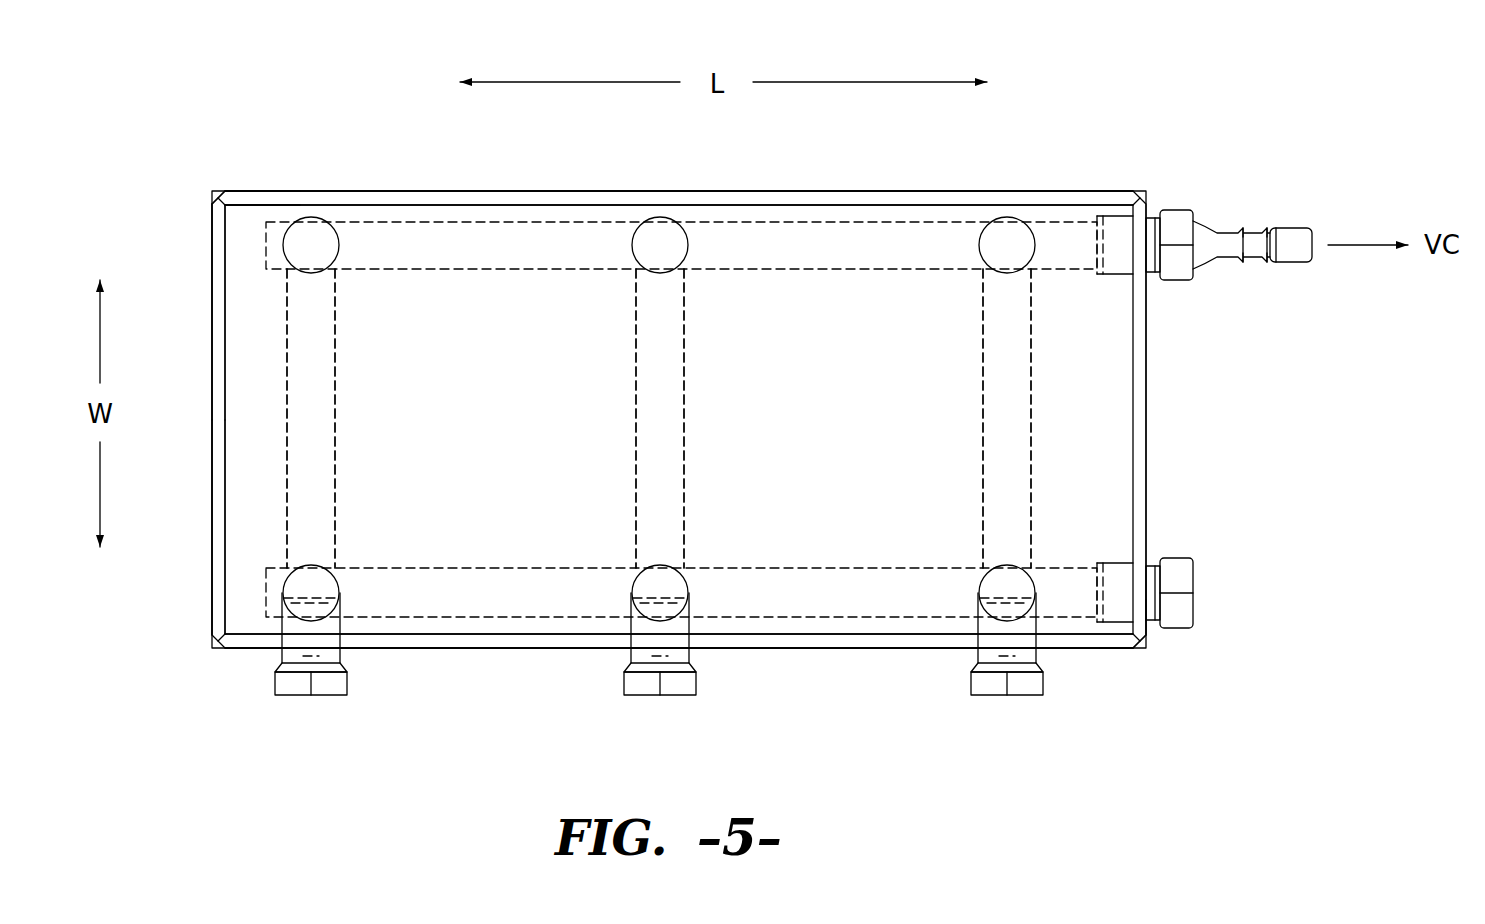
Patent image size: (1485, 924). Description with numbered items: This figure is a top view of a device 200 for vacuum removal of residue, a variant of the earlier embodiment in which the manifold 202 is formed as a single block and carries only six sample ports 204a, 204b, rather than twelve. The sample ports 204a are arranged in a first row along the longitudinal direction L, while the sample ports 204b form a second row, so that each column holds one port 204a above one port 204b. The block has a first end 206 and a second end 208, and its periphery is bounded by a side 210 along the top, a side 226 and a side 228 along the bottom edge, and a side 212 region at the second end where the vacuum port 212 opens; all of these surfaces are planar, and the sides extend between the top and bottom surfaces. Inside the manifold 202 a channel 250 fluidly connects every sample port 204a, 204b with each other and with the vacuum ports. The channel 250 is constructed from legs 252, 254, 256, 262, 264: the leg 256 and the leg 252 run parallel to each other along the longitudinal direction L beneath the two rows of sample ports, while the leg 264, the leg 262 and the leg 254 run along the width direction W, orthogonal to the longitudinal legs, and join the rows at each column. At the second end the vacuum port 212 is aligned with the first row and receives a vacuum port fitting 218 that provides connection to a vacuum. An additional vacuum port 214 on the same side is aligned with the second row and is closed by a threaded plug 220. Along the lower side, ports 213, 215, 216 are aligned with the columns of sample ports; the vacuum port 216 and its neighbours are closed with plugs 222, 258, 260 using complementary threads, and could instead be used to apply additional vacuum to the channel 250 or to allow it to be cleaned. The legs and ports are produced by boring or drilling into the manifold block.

The device 200 is at (1078, 105).
The manifold 202 is at (250, 350).
The sample ports 204a is at (315, 243).
The sample ports 204b is at (657, 578).
The first end wall 206 is at (193, 245).
The second end wall 208 is at (197, 593).
The top wall corner 210 is at (277, 188).
The vacuum port 212 is at (1110, 230).
The port 213 is at (327, 625).
The vacuum port 214 is at (1132, 645).
The port 215 is at (677, 623).
The vacuum port 216 is at (1022, 623).
The vacuum port fitting 218 is at (1180, 228).
The plug 220 is at (1182, 573).
The plug 222 is at (1022, 682).
The upper wall 226 is at (453, 188).
The lower wall 228 is at (475, 652).
The channel 250 is at (446, 252).
The leg 252 is at (378, 580).
The leg 254 is at (1015, 418).
The leg 256 is at (783, 242).
The second fitting nut 258 is at (677, 685).
The first fitting nut 260 is at (327, 685).
The leg 262 is at (668, 360).
The leg 264 is at (313, 407).